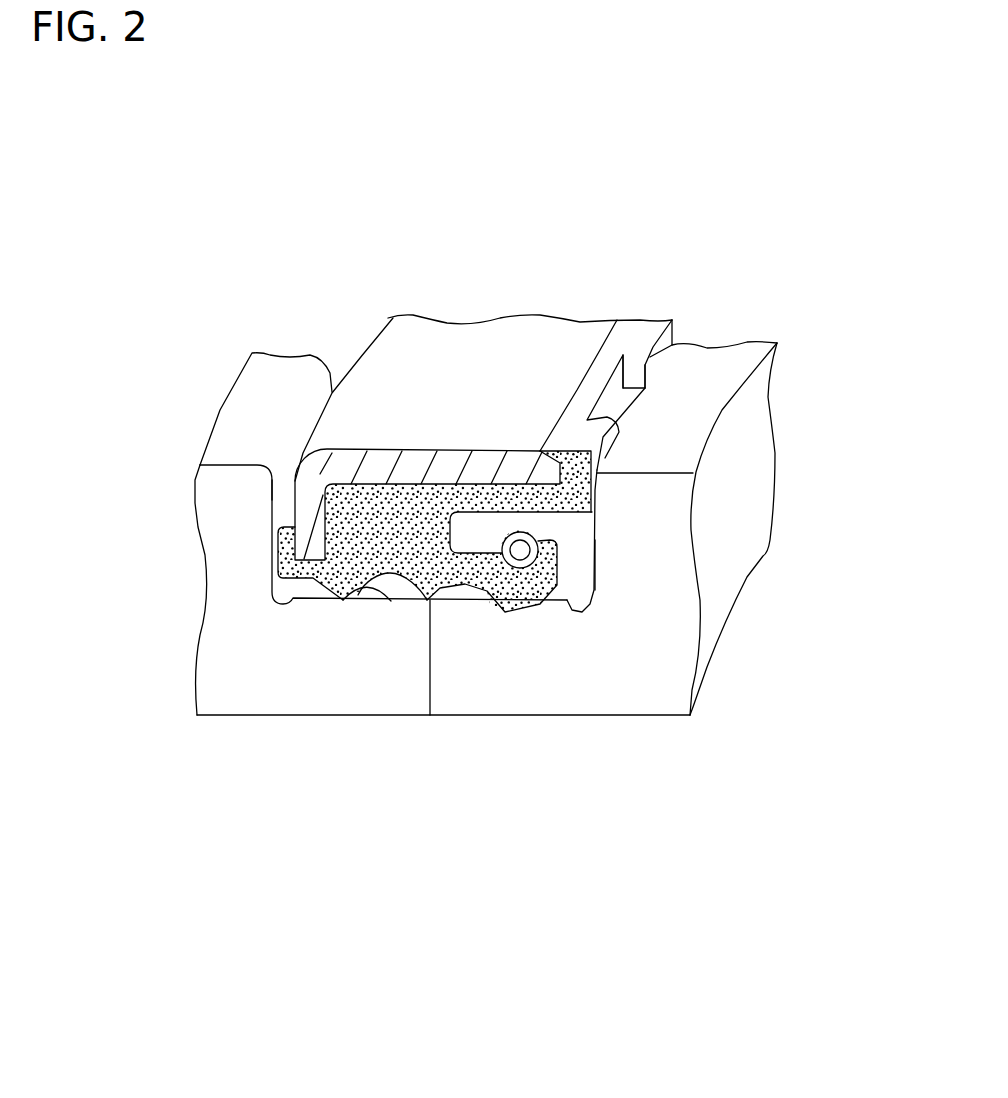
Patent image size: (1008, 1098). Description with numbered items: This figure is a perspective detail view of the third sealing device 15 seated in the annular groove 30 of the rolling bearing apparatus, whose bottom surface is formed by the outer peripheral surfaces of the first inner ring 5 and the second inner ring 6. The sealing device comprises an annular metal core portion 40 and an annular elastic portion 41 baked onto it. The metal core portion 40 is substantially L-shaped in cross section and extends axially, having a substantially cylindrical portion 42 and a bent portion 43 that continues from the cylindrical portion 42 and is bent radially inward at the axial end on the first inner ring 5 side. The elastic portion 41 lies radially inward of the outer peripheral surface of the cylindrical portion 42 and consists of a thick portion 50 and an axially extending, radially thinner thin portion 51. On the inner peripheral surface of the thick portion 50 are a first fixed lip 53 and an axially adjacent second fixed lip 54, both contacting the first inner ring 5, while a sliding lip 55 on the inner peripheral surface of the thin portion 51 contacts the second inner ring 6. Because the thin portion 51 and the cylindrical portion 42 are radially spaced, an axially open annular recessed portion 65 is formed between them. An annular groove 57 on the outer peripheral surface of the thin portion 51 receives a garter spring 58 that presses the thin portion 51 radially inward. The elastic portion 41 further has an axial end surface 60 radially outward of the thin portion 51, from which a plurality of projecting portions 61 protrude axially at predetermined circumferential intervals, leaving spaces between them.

The first inner ring 5 is at (243, 630).
The second inner ring 6 is at (630, 650).
The third sealing device 15 is at (444, 308).
The annular groove 30 is at (540, 569).
The metal core portion 40 is at (350, 455).
The elastic portion 41 is at (428, 513).
The cylindrical portion 42 is at (511, 460).
The bent portion 43 is at (300, 488).
The thick portion 50 is at (333, 568).
The thin portion 51 is at (492, 572).
The first fixed lip 53 is at (390, 600).
The second fixed lip 54 is at (347, 590).
The sliding lip 55 is at (503, 600).
The annular groove 57 is at (593, 557).
The garter spring 58 is at (525, 545).
The axial end surface 60 is at (612, 393).
The projecting portions 61 is at (657, 357).
The annular recessed portion 65 is at (472, 560).